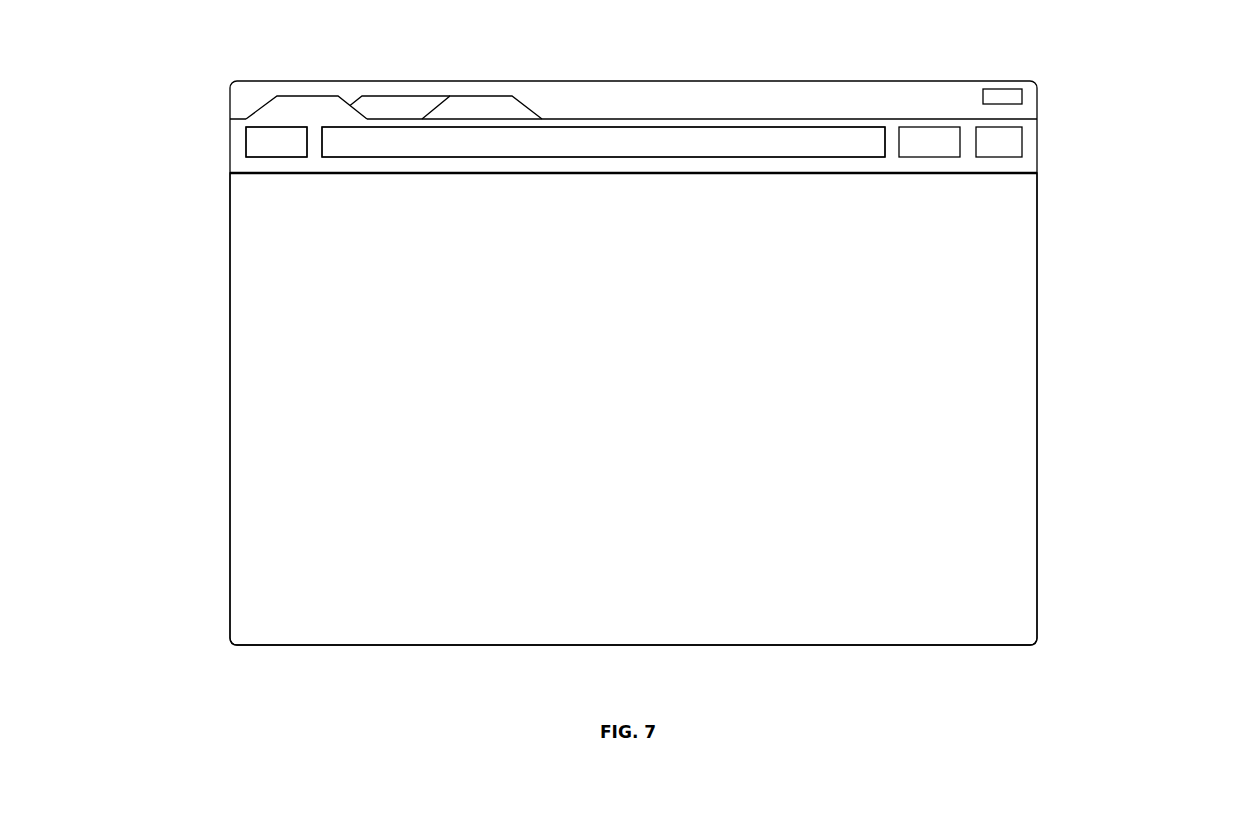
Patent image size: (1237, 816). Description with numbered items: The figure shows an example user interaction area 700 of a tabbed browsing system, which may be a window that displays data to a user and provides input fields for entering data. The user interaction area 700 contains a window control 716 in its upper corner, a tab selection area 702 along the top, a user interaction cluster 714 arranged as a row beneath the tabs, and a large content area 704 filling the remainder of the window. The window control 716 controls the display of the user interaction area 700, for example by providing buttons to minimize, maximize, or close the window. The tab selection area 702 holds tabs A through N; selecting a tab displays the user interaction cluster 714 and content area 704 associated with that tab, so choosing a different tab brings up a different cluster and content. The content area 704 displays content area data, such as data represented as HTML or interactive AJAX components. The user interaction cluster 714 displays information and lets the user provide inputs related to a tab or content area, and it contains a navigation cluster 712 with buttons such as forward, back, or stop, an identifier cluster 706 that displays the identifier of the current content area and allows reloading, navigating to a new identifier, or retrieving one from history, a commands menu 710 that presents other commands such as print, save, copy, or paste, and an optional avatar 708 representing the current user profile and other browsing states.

The user interaction area 700 is at (1026, 60).
The tab selection area 702 is at (227, 117).
The content area 704 is at (1052, 181).
The identifier cluster 706 is at (610, 135).
The avatar 708 is at (1013, 147).
The commands menu 710 is at (912, 150).
The navigation cluster 712 is at (257, 132).
The user interaction cluster 714 is at (227, 173).
The window control 716 is at (998, 97).